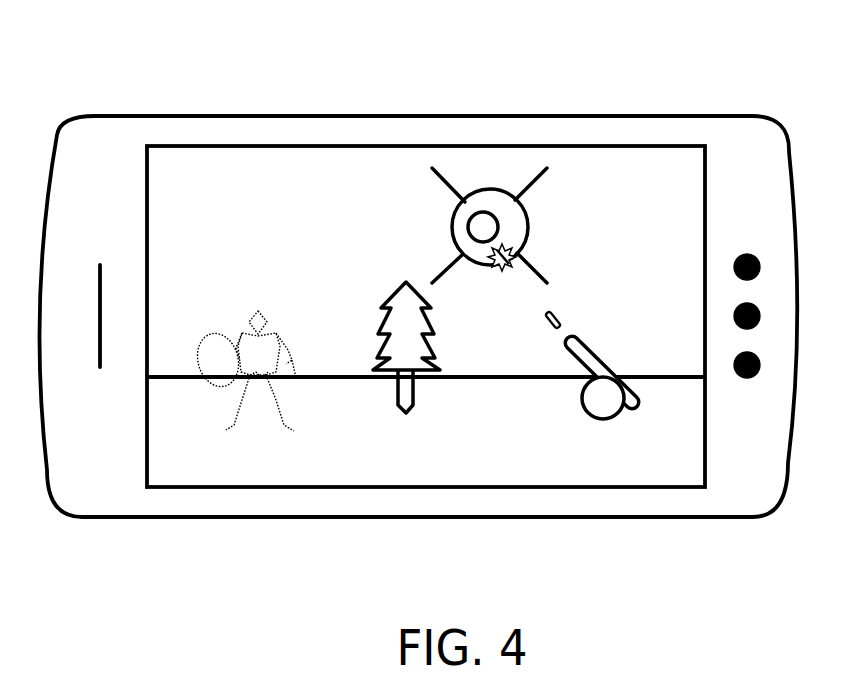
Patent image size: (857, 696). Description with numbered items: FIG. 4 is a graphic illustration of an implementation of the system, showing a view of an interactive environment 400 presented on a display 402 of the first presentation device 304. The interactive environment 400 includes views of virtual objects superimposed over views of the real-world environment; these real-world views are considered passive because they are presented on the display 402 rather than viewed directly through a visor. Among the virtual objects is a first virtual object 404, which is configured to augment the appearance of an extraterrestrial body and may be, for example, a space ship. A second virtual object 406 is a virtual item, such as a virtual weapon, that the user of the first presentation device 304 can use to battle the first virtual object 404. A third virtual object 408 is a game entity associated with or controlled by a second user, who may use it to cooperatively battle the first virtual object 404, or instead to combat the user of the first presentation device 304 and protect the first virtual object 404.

The first presentation device 304 is at (613, 118).
The interactive environment 400 is at (199, 229).
The display 402 is at (200, 146).
The first virtual object 404 is at (489, 189).
The second virtual object 406 is at (613, 367).
The third virtual object 408 is at (278, 358).